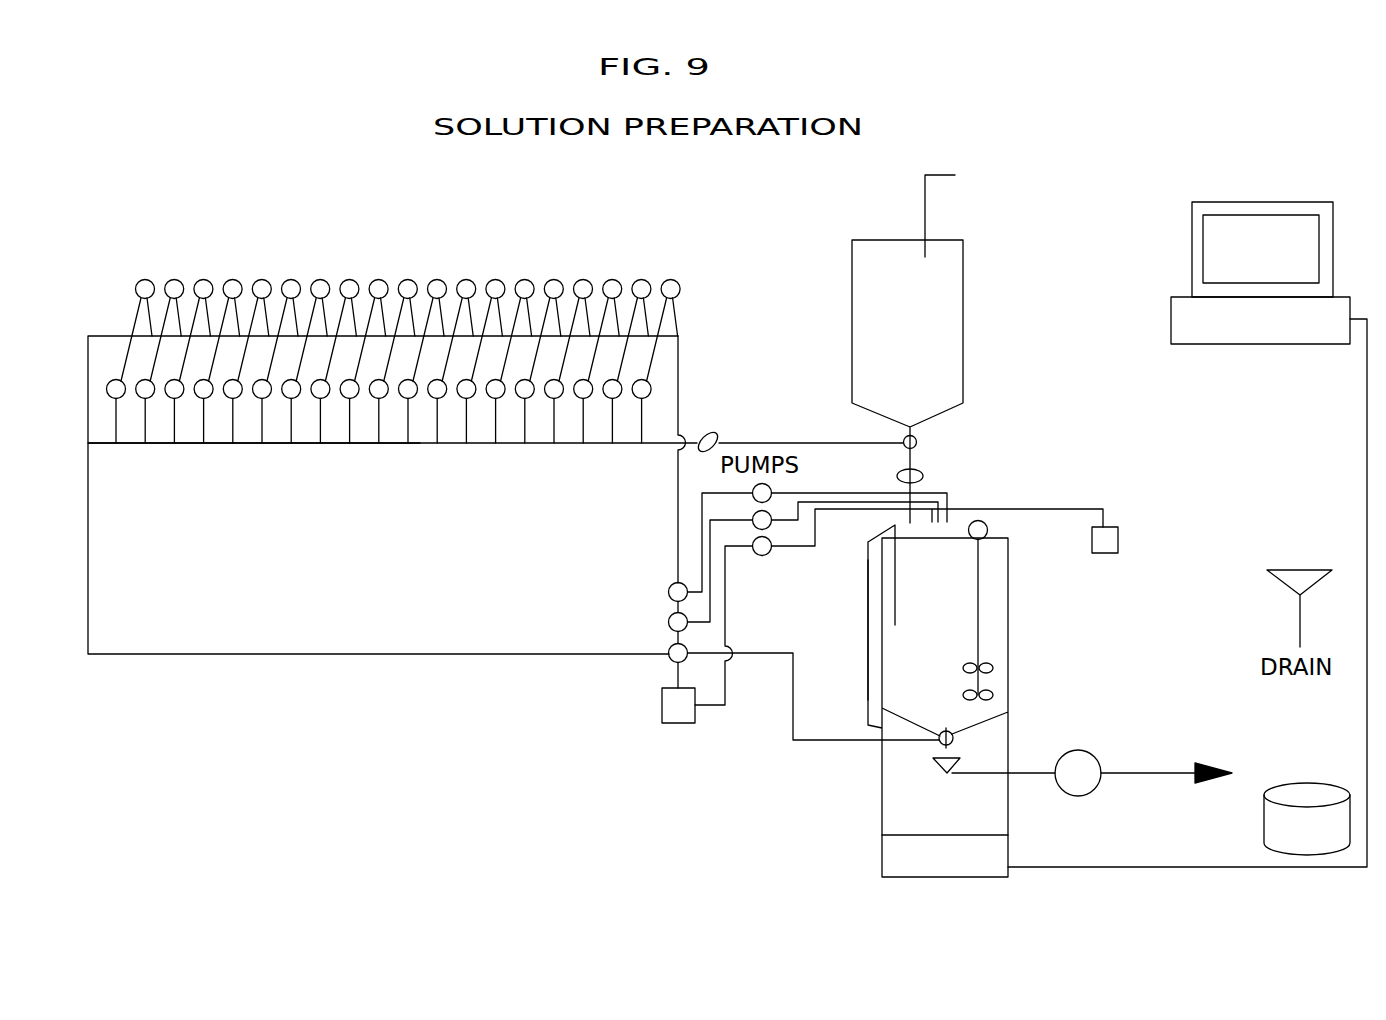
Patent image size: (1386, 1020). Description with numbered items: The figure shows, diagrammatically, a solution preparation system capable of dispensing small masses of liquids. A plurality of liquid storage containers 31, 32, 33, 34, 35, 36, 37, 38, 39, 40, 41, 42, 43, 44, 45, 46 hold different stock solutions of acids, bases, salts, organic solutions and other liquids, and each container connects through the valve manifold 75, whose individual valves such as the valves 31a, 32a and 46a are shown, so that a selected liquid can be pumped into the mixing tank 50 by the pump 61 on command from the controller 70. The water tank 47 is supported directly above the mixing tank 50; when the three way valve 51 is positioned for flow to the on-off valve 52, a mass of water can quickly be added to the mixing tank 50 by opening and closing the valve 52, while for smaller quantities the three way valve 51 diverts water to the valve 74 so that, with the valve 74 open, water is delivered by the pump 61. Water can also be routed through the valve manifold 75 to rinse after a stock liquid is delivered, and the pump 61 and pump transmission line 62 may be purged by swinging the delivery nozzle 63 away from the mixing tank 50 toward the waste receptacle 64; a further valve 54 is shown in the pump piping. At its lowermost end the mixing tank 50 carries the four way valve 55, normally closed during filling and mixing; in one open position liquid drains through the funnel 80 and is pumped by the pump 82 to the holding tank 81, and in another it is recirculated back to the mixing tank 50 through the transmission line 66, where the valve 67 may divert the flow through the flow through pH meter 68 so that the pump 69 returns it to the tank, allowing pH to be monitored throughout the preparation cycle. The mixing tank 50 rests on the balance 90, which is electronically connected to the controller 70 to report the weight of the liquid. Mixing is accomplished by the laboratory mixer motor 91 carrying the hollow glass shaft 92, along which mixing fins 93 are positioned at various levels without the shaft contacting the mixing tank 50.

The liquid storage container 31 is at (228, 282).
The liquid storage container 32 is at (257, 282).
The liquid storage container 33 is at (286, 282).
The liquid storage container 34 is at (315, 282).
The liquid storage container 35 is at (344, 282).
The liquid storage container 36 is at (374, 282).
The liquid storage container 37 is at (403, 282).
The liquid storage container 38 is at (432, 282).
The liquid storage container 39 is at (461, 282).
The liquid storage container 40 is at (490, 282).
The liquid storage container 41 is at (520, 282).
The liquid storage container 42 is at (549, 282).
The liquid storage container 43 is at (578, 282).
The liquid storage container 44 is at (607, 282).
The liquid storage container 45 is at (636, 282).
The liquid storage container 46 is at (666, 282).
The stock solution valve 31a is at (206, 398).
The stock solution valve 32a is at (235, 398).
The stock solution valve 46a is at (645, 398).
The water tank 47 is at (963, 343).
The mixing tank 50 is at (1008, 603).
The three way valve 51 is at (916, 438).
The on-off valve 52 is at (922, 472).
The valve 54 is at (669, 586).
The four way valve 55 is at (770, 528).
The pump 61 is at (753, 497).
The pump transmission line 62 is at (838, 493).
The delivery nozzle 63 is at (947, 500).
The waste receptacle 64 is at (1118, 542).
The transmission line 66 is at (868, 677).
The valve 67 is at (669, 647).
The flow through pH meter 68 is at (676, 723).
The pump 69 is at (763, 556).
The controller 70 is at (1192, 255).
The valve 74 is at (715, 432).
The valve manifold 75 is at (422, 444).
The funnel 80 is at (942, 767).
The holding tank 81 is at (1288, 825).
The pump 82 is at (1095, 791).
The balance 90 is at (1002, 857).
The laboratory mixer motor 91 is at (988, 530).
The hollow glass shaft 92 is at (980, 648).
The mixing fins 93 is at (992, 692).